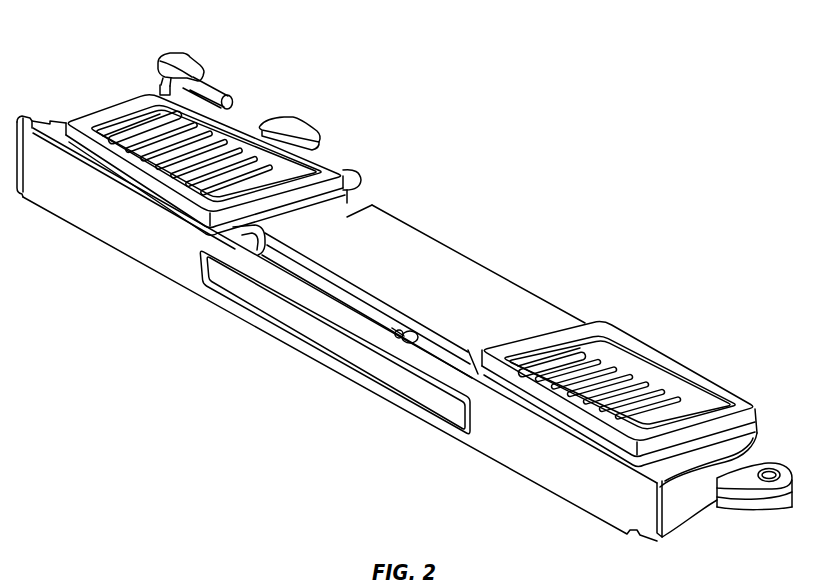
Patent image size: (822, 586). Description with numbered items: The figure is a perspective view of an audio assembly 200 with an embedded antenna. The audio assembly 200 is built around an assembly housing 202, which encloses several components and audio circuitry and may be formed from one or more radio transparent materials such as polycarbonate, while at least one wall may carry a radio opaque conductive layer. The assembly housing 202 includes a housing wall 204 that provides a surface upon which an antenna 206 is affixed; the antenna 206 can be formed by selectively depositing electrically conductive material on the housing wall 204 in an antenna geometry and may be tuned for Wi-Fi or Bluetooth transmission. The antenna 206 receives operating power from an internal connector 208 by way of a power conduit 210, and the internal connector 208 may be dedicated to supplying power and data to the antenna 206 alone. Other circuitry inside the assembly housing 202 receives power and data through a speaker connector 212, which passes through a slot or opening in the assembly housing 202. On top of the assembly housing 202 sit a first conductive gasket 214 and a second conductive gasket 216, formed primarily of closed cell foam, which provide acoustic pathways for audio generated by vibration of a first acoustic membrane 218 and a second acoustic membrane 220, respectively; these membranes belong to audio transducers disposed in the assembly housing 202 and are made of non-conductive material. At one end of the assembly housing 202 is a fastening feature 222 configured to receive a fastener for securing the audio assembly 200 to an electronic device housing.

The audio assembly 200 is at (586, 64).
The assembly housing 202 is at (477, 263).
The housing wall 204 is at (166, 246).
The antenna 206 is at (435, 420).
The internal connector 208 is at (193, 62).
The power conduit 210 is at (338, 298).
The speaker connector 212 is at (323, 125).
The first conductive gasket 214 is at (622, 371).
The second conductive gasket 216 is at (219, 152).
The first acoustic membrane 218 is at (581, 368).
The second acoustic membrane 220 is at (157, 145).
The fastening feature 222 is at (783, 436).